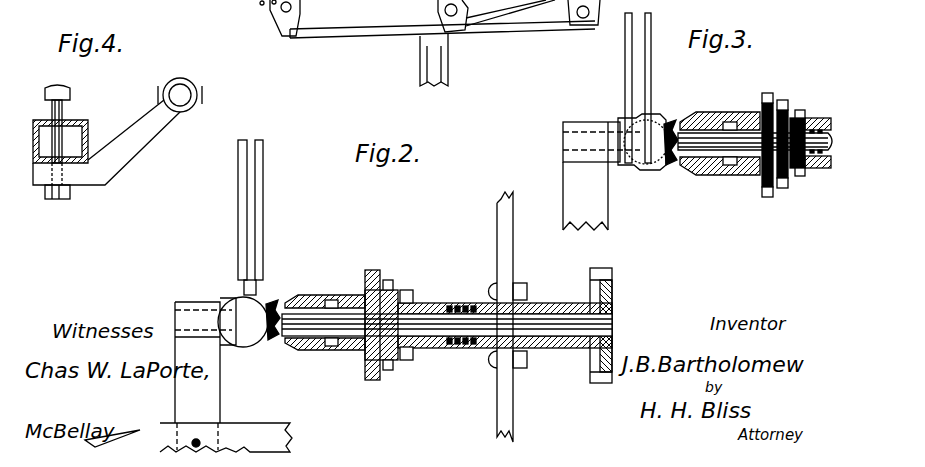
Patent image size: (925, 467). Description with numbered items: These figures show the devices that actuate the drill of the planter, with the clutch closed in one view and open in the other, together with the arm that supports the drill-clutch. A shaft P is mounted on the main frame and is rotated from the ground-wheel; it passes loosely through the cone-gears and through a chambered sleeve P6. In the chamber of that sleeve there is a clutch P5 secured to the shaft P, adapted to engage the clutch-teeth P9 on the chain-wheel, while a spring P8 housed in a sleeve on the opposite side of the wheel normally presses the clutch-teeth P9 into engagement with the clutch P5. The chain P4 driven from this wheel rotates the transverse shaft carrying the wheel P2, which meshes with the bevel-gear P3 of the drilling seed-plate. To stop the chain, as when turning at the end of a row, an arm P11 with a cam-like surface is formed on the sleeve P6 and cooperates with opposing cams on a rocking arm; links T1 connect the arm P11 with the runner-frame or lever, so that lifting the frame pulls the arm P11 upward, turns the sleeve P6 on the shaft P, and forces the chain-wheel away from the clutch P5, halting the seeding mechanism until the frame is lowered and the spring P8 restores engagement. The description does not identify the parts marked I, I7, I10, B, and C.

In FIG. 2, the shaft P is at (608, 273).
In FIG. 3, the shaft P is at (812, 176).
In FIG. 2, the wheel P2 is at (372, 270).
In FIG. 3, the wheel P2 is at (768, 93).
In FIG. 2, the bevel-gear P3 is at (390, 280).
In FIG. 3, the bevel-gear P3 is at (787, 108).
In FIG. 2, the chain P4 is at (412, 291).
In FIG. 3, the chain P4 is at (806, 114).
In FIG. 2, the clutch P5 is at (233, 346).
In FIG. 3, the clutch P5 is at (644, 166).
In FIG. 4, the chambered sleeve P6 is at (193, 88).
In FIG. 2, the chambered sleeve P6 is at (226, 299).
In FIG. 3, the chambered sleeve P6 is at (694, 120).
In FIG. 2, the spring P8 is at (458, 343).
In FIG. 3, the spring P8 is at (620, 124).
In FIG. 2, the clutch-teeth P9 is at (358, 300).
In FIG. 3, the clutch-teeth P9 is at (735, 125).
In FIG. 2, the arm P11 is at (262, 280).
In FIG. 2, the rod I is at (614, 323).
In FIG. 3, the rod I is at (755, 141).
In FIG. 2, the threaded portion I7 is at (460, 303).
In FIG. 3, the threaded portion I7 is at (828, 120).
In FIG. 4, the bracket I10 is at (152, 163).
In FIG. 2, the bracket I10 is at (212, 373).
In FIG. 3, the bracket I10 is at (600, 183).
In FIG. 2, the links T1 is at (240, 192).
In FIG. 3, the links T1 is at (625, 47).
In FIG. 4, the base plate B is at (72, 112).
In FIG. 2, the base plate B is at (292, 428).
In FIG. 2, the plate C is at (511, 317).